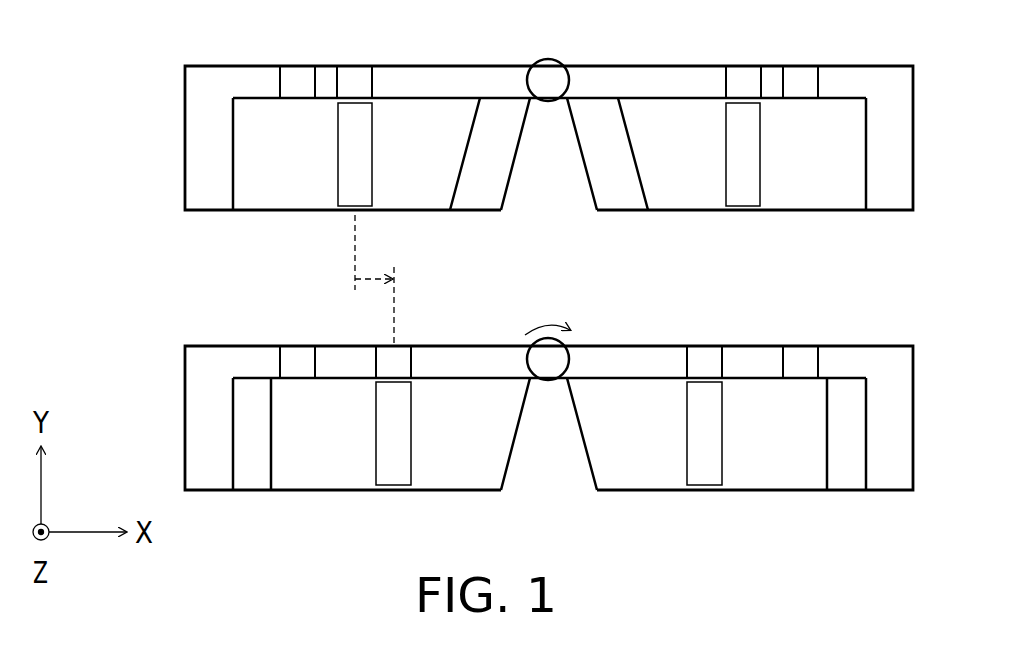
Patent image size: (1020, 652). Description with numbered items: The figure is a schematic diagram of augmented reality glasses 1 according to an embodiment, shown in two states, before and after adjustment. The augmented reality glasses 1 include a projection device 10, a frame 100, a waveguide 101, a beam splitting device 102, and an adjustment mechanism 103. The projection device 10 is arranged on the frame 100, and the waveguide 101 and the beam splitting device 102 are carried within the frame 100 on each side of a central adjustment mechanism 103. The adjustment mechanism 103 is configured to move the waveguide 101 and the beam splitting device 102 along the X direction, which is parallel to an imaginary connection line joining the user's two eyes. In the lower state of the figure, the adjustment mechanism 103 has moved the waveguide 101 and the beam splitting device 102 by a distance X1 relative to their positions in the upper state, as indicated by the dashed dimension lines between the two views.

The augmented reality glasses 1 is at (158, 43).
The projection device 10 is at (280, 83).
The frame 100 is at (190, 140).
The waveguide 101 is at (338, 188).
The beam splitting device 102 is at (337, 83).
The adjustment mechanism 103 is at (572, 78).
The distance X1 is at (374, 280).